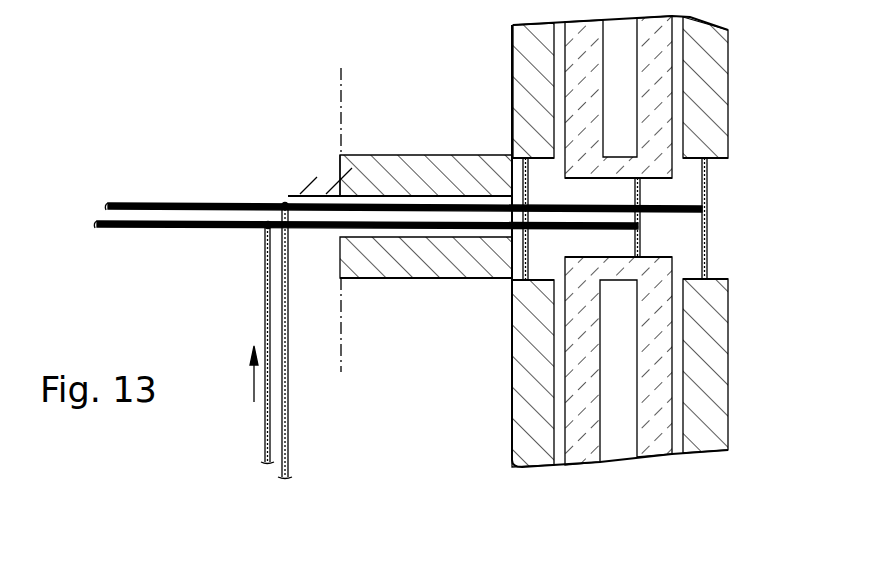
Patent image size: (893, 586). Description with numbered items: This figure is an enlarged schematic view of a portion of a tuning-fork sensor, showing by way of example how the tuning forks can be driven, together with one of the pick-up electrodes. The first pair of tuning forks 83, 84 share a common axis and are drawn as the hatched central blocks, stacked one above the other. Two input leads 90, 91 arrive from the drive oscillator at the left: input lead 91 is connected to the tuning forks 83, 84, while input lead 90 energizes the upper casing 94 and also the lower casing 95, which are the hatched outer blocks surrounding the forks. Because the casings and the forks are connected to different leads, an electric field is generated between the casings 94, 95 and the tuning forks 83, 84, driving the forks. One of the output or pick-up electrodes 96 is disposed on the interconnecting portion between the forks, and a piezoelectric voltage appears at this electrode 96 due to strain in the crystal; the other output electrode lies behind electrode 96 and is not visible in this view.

The tuning fork 83 is at (667, 83).
The tuning fork 84 is at (657, 373).
The input lead 90 is at (205, 203).
The input lead 91 is at (168, 230).
The upper casing 94 is at (527, 108).
The lower casing 95 is at (515, 372).
The output electrode 96 is at (395, 167).